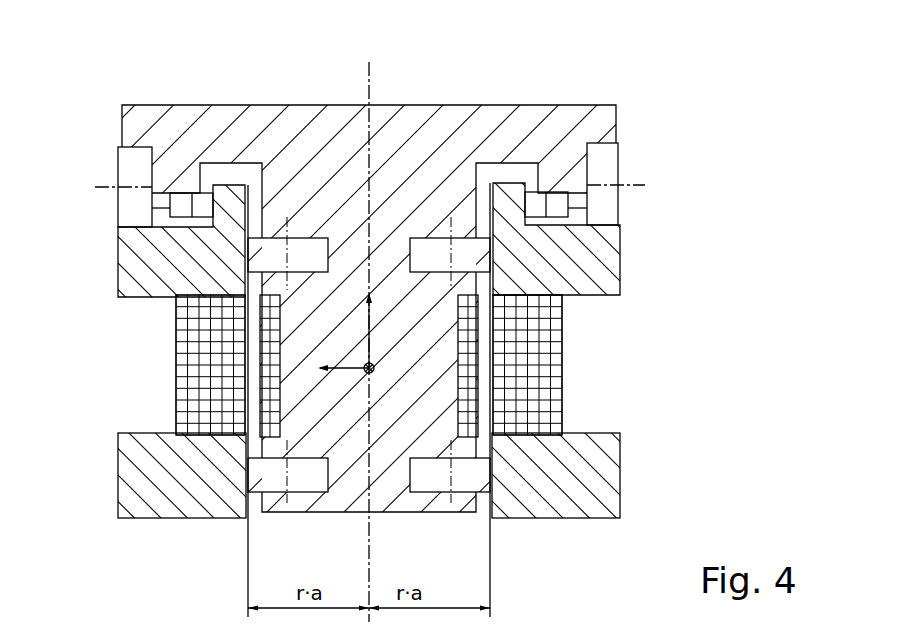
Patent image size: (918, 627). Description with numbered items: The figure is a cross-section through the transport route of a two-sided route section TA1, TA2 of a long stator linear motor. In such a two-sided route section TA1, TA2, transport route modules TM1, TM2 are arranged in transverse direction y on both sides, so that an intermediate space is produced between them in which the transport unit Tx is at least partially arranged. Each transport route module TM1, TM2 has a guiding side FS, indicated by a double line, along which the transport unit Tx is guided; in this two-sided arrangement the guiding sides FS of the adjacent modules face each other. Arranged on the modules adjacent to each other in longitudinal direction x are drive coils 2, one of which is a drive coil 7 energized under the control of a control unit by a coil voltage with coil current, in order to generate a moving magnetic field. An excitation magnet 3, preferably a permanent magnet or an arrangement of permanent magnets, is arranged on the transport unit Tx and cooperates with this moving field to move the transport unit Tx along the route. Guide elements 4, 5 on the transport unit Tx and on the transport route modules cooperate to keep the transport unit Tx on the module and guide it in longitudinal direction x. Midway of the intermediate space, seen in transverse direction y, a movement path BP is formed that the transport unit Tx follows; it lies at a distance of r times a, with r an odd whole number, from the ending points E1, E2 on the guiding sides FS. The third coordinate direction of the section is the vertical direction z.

The drive coil 2 is at (205, 387).
The excitation magnet 3 is at (262, 422).
The guide element 4 is at (108, 165).
The guide element 5 is at (228, 198).
The drive coil 7 is at (414, 520).
The movement path BP is at (367, 76).
The ending point E1 is at (247, 520).
The ending point E2 is at (492, 518).
The guiding side FS is at (367, 363).
The two-sided route section TA1 is at (459, 313).
The two-sided route section TA2 is at (630, 127).
The transport route module TM1 is at (153, 257).
The transport route module TM2 is at (560, 265).
The transport unit Tx is at (459, 313).
The longitudinal direction x is at (376, 355).
The transverse direction y is at (343, 352).
The z direction z is at (377, 328).